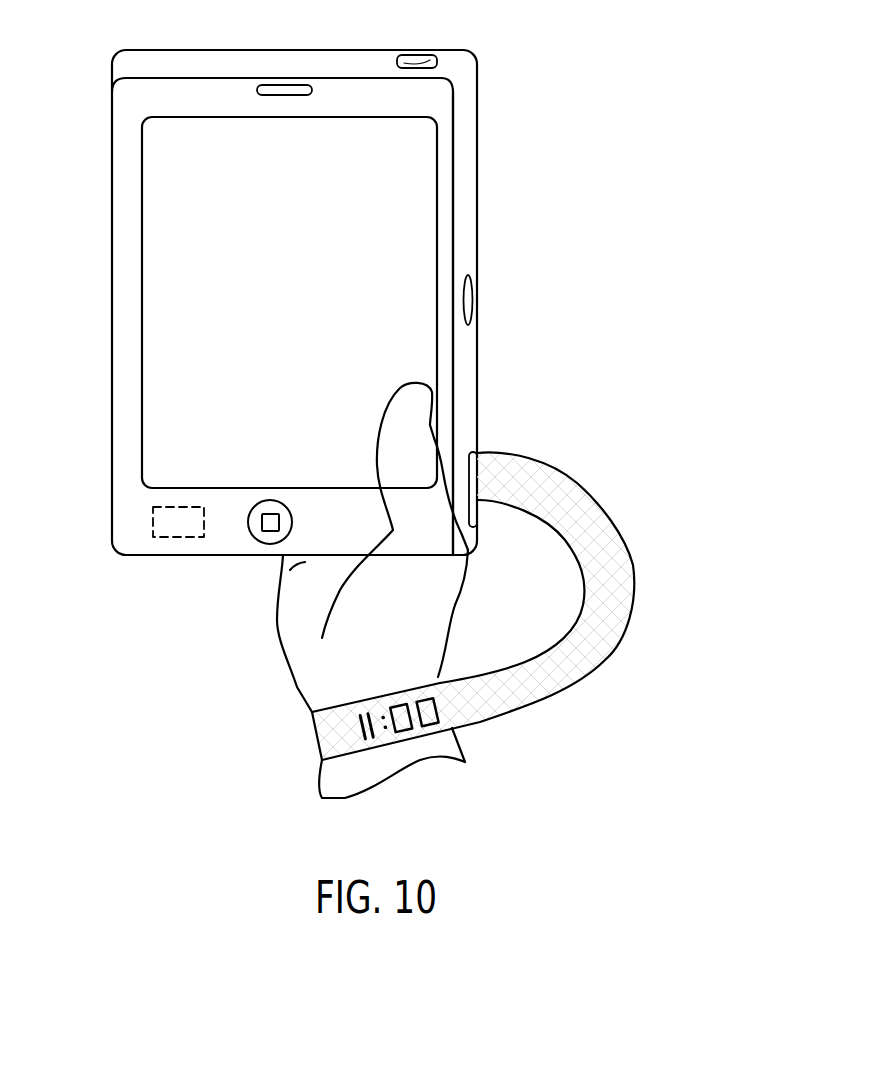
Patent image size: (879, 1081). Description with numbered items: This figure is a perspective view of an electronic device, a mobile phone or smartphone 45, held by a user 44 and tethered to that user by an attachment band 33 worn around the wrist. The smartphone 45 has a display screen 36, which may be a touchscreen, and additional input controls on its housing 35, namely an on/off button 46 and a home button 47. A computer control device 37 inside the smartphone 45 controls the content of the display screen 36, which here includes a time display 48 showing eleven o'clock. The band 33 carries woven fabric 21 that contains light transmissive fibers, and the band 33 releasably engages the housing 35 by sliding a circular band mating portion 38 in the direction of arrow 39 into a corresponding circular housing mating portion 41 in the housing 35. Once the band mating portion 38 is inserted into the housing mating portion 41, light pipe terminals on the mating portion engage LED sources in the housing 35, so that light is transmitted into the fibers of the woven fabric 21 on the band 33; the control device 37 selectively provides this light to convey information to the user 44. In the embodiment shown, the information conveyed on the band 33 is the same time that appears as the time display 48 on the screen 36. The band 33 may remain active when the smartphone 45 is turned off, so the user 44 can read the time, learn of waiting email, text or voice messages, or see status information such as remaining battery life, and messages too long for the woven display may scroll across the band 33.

The woven fabric 21 is at (620, 548).
The attachment band 33 is at (508, 606).
The housing 35 is at (467, 119).
The display screen 36 is at (347, 143).
The computer control device 37 is at (167, 522).
The circular band mating portion 38 is at (477, 492).
The arrow 39 is at (488, 400).
The circular housing mating portion 41 is at (476, 536).
The user 44 is at (442, 630).
The smartphone 45 is at (482, 172).
The on/off button 46 is at (413, 62).
The home button 47 is at (261, 545).
The time display 48 is at (337, 428).